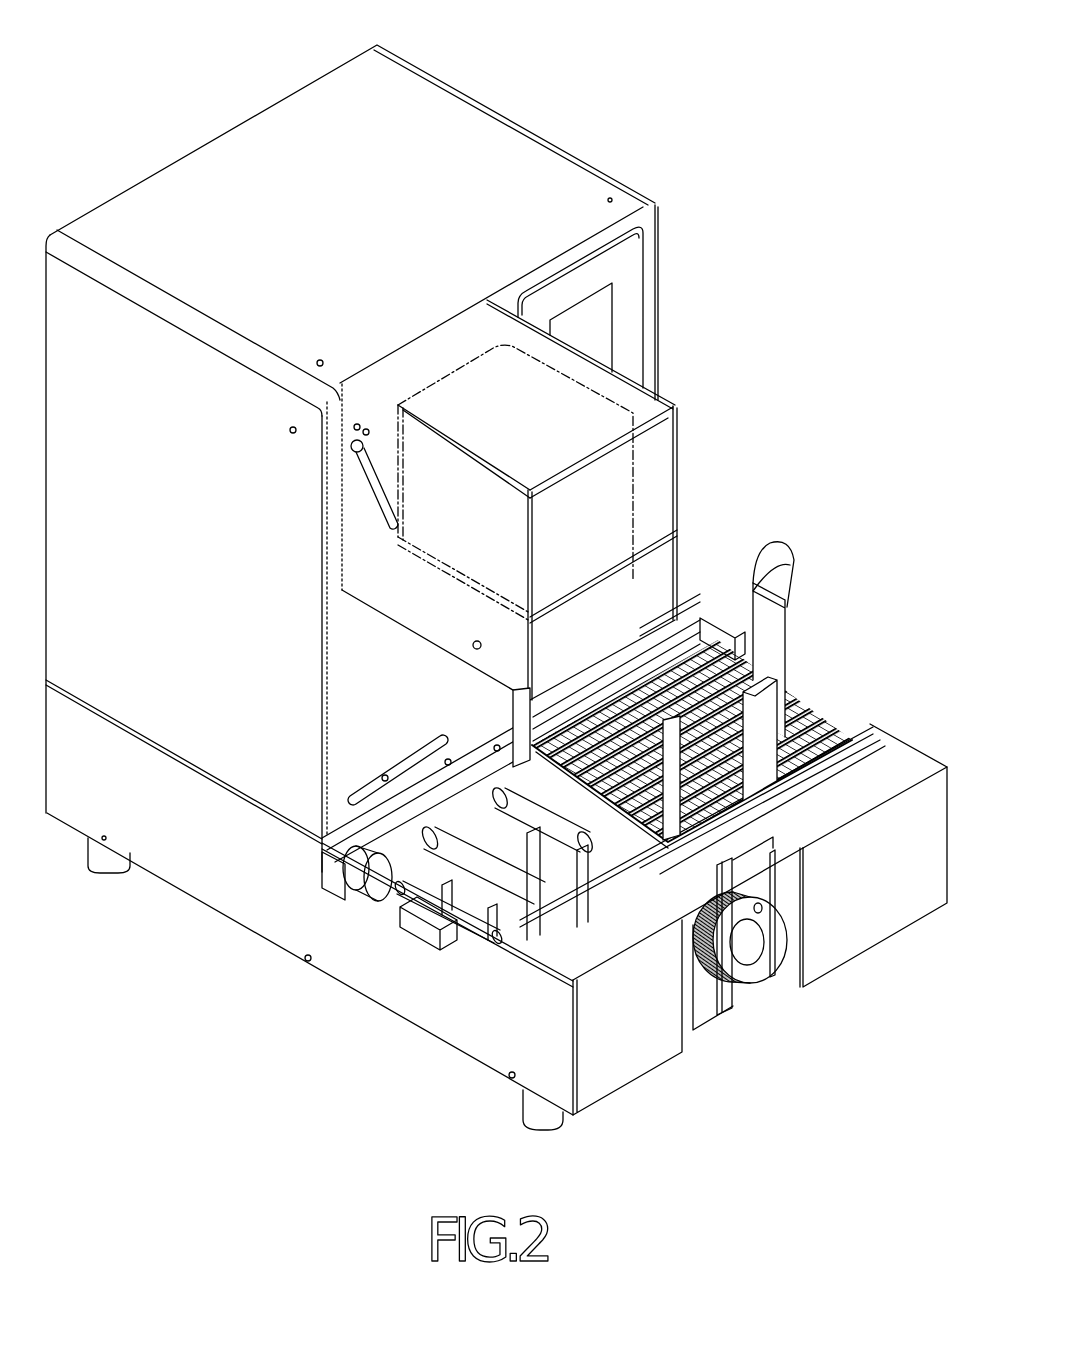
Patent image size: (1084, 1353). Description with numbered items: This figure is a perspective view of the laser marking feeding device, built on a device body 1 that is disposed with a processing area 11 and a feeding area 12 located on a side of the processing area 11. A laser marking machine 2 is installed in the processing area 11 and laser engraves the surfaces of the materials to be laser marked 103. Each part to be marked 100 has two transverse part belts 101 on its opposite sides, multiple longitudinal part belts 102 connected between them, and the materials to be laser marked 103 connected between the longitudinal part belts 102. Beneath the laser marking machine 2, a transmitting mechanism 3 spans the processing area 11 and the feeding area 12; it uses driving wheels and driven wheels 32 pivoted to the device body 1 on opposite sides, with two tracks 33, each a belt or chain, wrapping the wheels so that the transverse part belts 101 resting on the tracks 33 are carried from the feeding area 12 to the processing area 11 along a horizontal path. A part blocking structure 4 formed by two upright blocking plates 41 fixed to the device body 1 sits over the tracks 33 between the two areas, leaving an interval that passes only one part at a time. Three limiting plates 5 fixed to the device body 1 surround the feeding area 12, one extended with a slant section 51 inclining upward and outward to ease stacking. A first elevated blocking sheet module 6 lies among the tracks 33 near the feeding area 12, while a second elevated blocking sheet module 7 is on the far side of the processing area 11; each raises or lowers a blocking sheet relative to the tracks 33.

The device body 1 is at (874, 953).
The laser marking machine 2 is at (592, 412).
The transmitting mechanism 3 is at (330, 874).
The part blocking structure 4 is at (728, 808).
The limiting plate 5 is at (778, 612).
The first elevated blocking sheet module 6 is at (581, 849).
The second elevated blocking sheet module 7 is at (406, 934).
The processing area 11 is at (460, 806).
The feeding area 12 is at (724, 640).
The driven wheel 32 is at (395, 905).
The track 33 is at (345, 900).
The upright blocking plate 41 is at (512, 712).
The slant section 51 is at (777, 563).
The part to be marked 100 is at (838, 732).
The transverse part belt 101 is at (662, 622).
The longitudinal part belt 102 is at (812, 720).
The material to be laser marked 103 is at (833, 733).